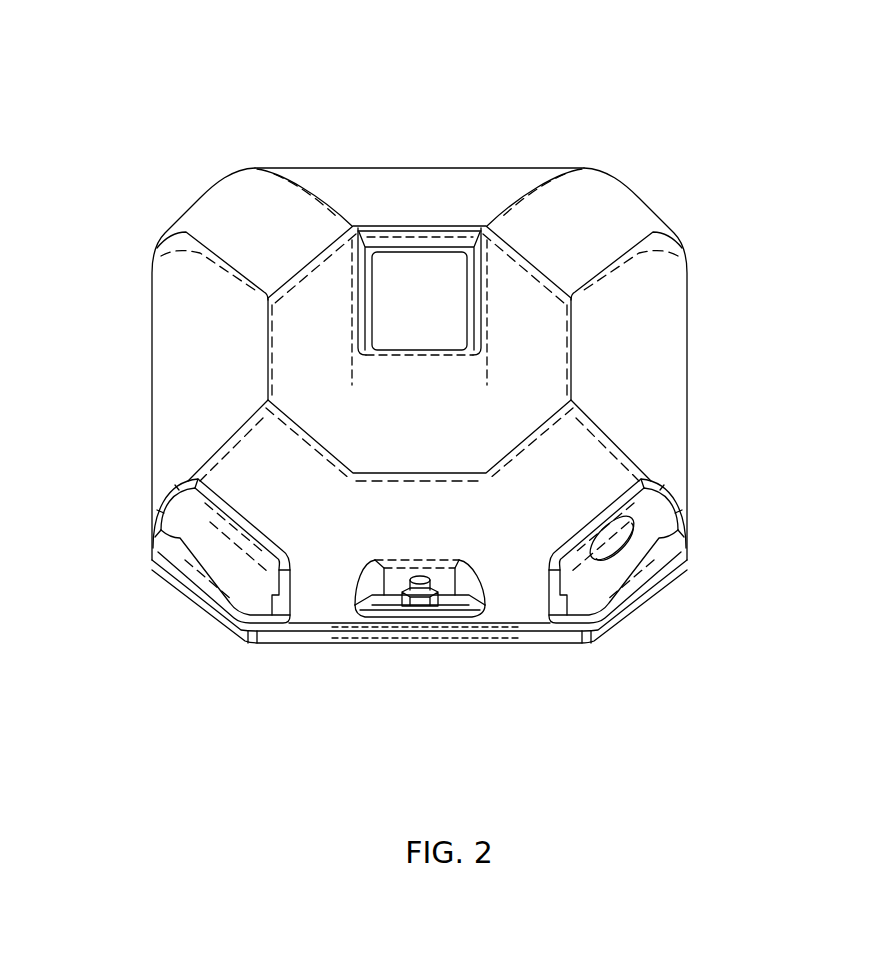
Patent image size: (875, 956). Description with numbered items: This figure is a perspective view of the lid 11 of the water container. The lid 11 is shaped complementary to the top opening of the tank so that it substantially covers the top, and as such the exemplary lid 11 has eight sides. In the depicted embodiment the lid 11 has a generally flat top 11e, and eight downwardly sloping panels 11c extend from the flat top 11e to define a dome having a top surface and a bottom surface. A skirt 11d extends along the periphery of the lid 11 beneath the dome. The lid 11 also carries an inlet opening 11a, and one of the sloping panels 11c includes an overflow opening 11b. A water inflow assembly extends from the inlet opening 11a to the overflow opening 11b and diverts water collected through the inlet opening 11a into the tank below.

The lid 11 is at (365, 167).
The inlet opening 11a is at (472, 285).
The overflow opening 11b is at (636, 545).
The downwardly sloping panels 11c is at (263, 224).
The skirt 11d is at (553, 636).
The flat top 11e is at (320, 360).